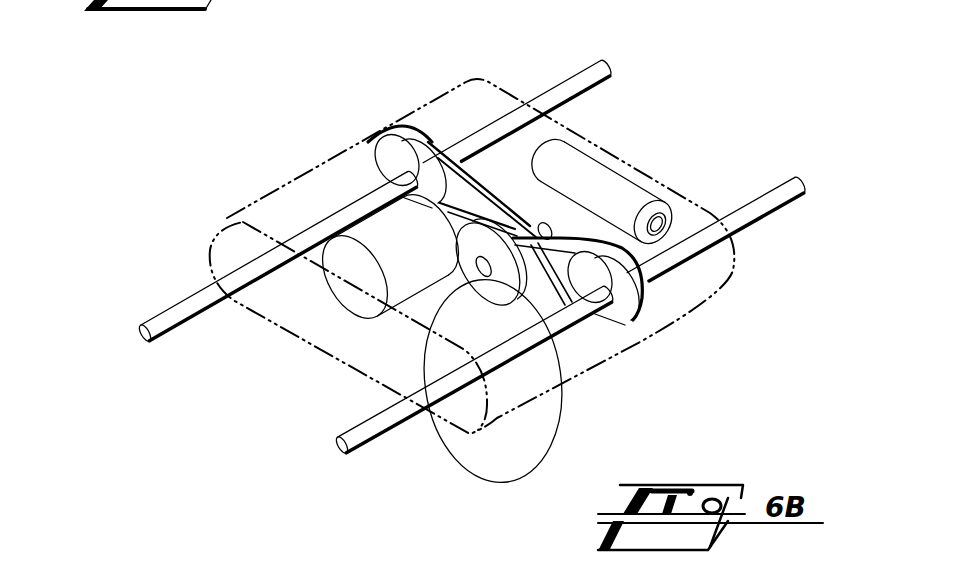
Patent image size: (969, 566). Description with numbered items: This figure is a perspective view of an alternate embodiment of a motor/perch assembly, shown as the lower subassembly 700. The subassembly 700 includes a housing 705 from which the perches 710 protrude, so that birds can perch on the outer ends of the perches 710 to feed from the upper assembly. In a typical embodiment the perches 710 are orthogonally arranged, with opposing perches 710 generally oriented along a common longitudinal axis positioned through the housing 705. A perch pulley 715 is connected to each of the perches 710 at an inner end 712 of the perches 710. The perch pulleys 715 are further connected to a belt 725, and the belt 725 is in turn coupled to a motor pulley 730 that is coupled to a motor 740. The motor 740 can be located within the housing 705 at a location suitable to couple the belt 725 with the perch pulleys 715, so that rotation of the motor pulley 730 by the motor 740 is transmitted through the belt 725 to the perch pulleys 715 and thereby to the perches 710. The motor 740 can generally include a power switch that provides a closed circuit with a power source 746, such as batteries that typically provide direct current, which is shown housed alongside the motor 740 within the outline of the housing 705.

The subassembly 700 is at (253, 126).
The housing 705 is at (255, 203).
The perches 710 is at (537, 0).
The inner end 712 is at (433, 143).
The perch pulley 715 is at (383, 158).
The belt 725 is at (560, 383).
The motor pulley 730 is at (492, 371).
The motor 740 is at (350, 297).
The power source 746 is at (612, 187).